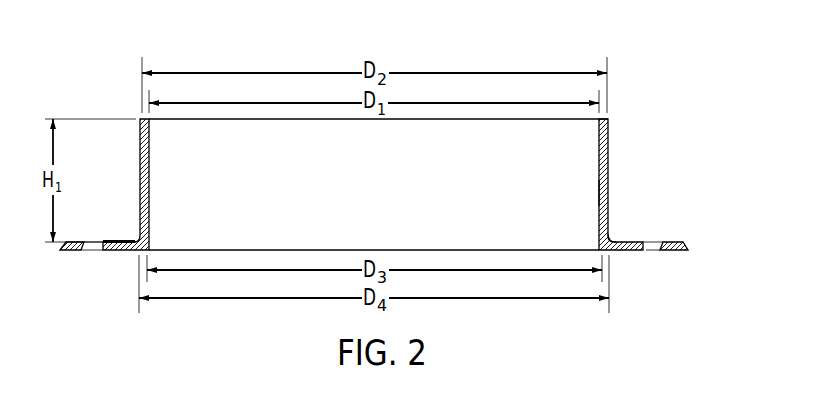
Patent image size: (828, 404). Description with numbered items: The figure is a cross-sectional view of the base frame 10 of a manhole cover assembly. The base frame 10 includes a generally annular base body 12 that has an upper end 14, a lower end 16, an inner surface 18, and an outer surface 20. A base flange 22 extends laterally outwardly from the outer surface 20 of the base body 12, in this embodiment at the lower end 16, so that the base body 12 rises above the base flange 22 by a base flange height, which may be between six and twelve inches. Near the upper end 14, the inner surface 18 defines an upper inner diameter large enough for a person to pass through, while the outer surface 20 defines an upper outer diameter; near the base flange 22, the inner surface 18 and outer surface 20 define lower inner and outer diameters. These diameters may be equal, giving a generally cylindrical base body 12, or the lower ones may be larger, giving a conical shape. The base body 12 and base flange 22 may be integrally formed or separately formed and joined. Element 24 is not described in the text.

The base frame 10 is at (116, 106).
The base body 12 is at (608, 147).
The upper end 14 is at (437, 120).
The lower end 16 is at (375, 249).
The inner surface 18 is at (607, 187).
The outer surface 20 is at (607, 129).
The base flange 22 is at (632, 238).
The flange 24 is at (655, 249).